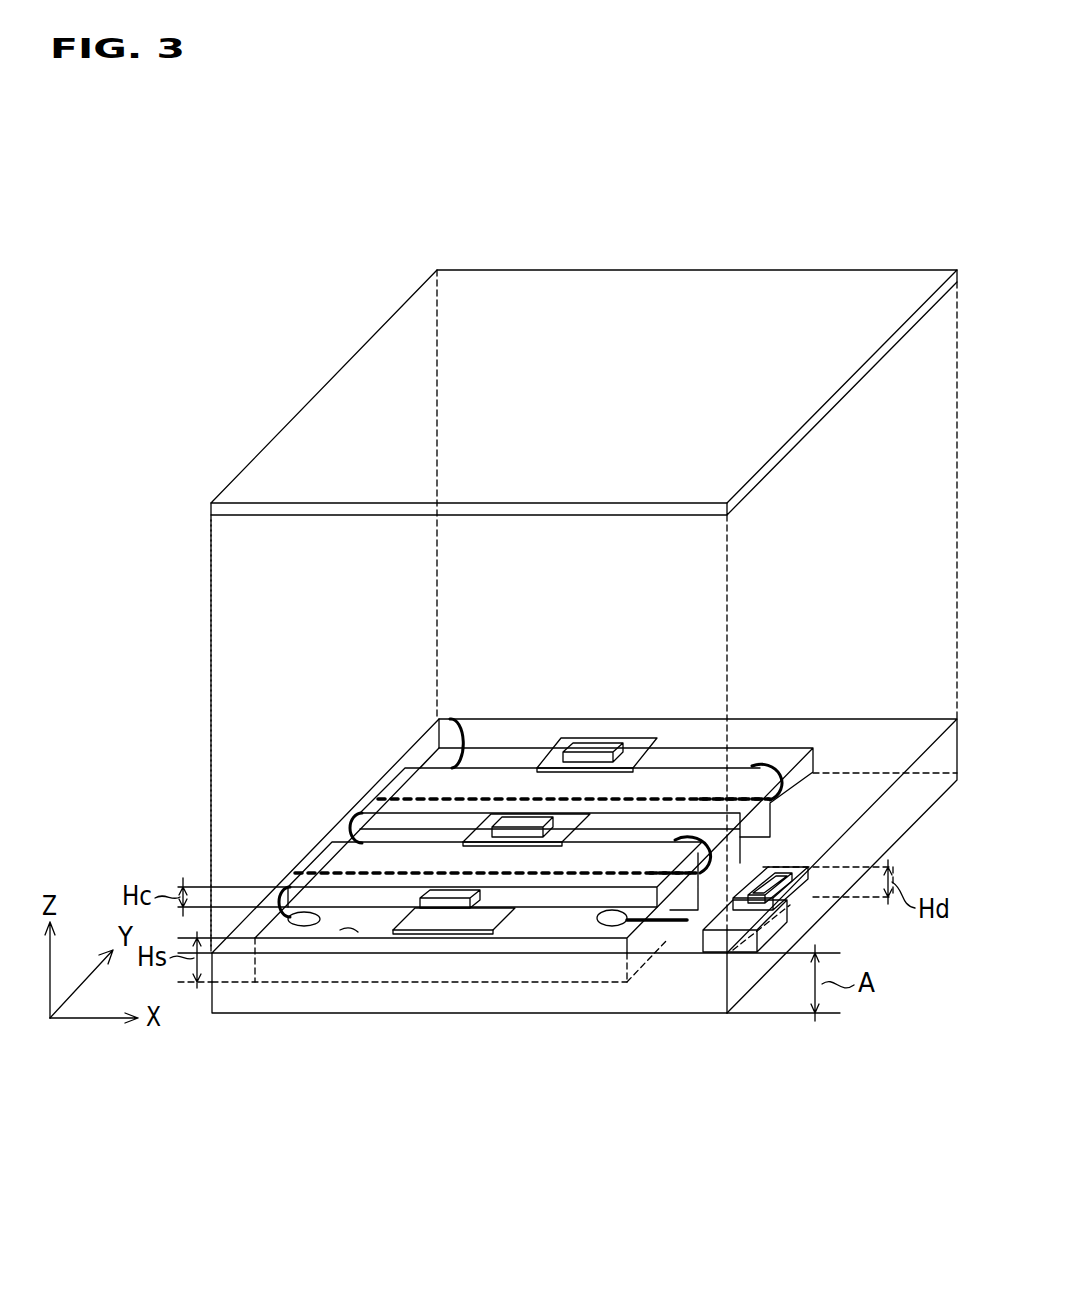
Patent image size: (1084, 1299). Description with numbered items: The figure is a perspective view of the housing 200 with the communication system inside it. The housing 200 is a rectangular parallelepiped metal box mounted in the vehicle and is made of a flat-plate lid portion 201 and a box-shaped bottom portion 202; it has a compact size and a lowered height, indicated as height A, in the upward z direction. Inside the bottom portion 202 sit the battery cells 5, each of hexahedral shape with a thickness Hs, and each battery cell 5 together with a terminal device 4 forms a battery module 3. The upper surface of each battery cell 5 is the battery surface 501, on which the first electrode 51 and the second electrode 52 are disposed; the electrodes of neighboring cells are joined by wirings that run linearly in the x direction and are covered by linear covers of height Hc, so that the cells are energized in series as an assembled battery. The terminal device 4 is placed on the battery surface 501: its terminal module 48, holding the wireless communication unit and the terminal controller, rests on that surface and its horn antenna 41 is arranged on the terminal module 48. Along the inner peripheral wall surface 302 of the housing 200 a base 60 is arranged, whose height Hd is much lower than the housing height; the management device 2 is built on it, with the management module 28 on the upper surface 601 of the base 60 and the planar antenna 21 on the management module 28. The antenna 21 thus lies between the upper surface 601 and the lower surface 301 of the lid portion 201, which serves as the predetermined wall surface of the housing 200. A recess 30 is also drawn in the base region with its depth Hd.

The housing 200 is at (500, 610).
The lid portion 201 is at (533, 414).
The bottom portion 202 is at (288, 885).
The lower surface of the lid portion 301 is at (688, 515).
The inner peripheral wall surface 302 is at (862, 815).
The battery module 3 is at (586, 946).
The recess 30 is at (805, 895).
The battery cell 5 is at (512, 957).
The battery surface 501 is at (350, 935).
The first electrode 51 is at (455, 745).
The second electrode 52 is at (766, 766).
The terminal device 4 is at (561, 826).
The antenna 41 is at (458, 910).
The terminal module 48 is at (430, 935).
The management device 2 is at (844, 770).
The antenna 21 is at (780, 878).
The management module 28 is at (790, 895).
The base 60 is at (742, 999).
The upper surface of the base 601 is at (740, 952).